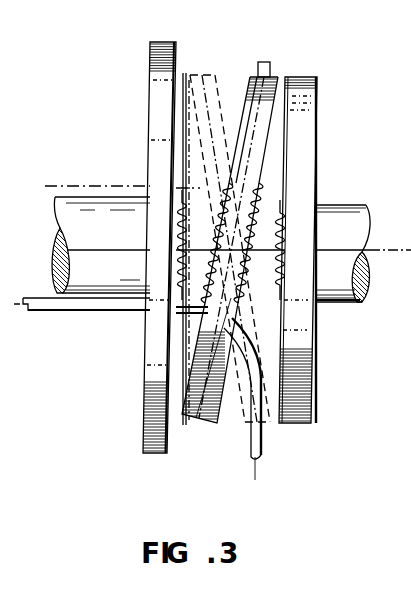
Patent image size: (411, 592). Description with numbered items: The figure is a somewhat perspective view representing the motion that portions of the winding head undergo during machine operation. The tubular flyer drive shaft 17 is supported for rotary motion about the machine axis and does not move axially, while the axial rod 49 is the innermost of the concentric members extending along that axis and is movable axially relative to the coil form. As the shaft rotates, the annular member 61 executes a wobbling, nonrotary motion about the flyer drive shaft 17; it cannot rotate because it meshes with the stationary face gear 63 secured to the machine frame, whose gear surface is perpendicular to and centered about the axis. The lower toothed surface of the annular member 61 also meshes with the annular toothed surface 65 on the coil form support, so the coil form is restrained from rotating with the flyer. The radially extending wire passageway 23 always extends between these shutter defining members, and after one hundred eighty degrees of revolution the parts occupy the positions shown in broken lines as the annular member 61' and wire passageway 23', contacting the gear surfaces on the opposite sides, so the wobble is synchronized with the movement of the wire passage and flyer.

The face gear 63 is at (152, 88).
The toothed surface 65 is at (313, 122).
The flyer drive shaft 17 is at (103, 197).
The axial rod 49 is at (55, 250).
The annular member 61 is at (218, 285).
The annular member in second position 61' is at (230, 219).
The wire passageway 23 is at (270, 416).
The wire passageway in second position 23' is at (284, 103).